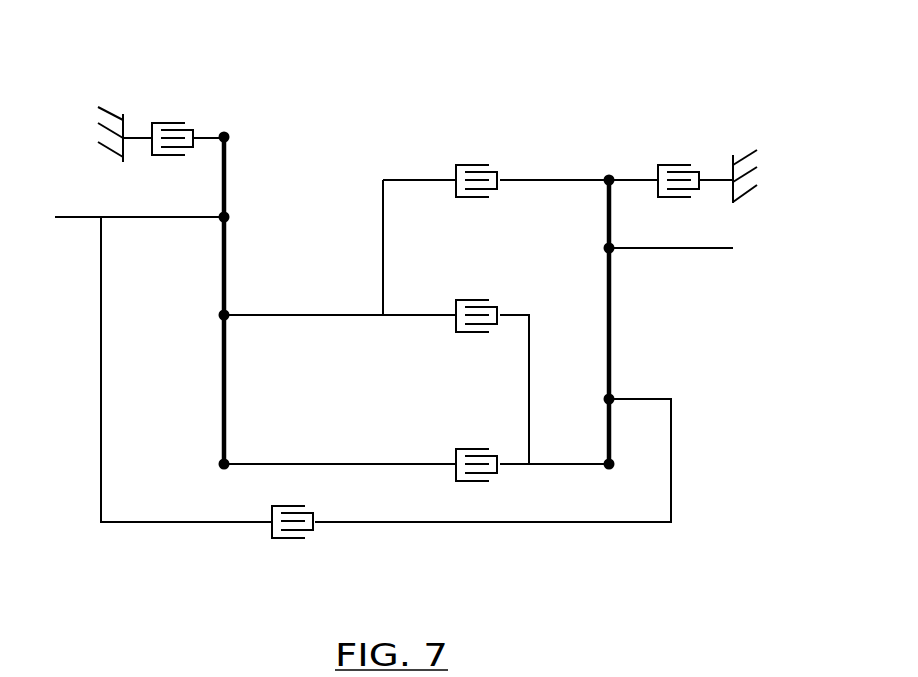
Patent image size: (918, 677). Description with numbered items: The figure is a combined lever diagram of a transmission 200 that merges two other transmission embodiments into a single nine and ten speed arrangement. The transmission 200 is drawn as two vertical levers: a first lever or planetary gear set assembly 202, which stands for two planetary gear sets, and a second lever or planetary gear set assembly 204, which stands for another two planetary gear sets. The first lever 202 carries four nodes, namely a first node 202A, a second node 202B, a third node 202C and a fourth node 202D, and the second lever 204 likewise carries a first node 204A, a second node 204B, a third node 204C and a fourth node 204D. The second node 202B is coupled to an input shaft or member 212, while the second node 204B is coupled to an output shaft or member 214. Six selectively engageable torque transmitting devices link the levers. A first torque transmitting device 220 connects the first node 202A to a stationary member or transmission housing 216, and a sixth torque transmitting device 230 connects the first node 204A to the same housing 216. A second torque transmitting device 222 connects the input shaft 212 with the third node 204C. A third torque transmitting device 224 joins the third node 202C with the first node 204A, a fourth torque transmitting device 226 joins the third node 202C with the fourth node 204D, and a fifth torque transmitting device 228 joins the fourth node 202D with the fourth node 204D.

The transmission 200 is at (553, 93).
The first lever or planetary gear set assembly 202 is at (266, 213).
The first node 202A is at (229, 136).
The second node 202B is at (229, 219).
The third node 202C is at (218, 315).
The fourth node 202D is at (218, 464).
The second lever or planetary gear set assembly 204 is at (661, 315).
The first node 204A is at (608, 170).
The second node 204B is at (603, 248).
The third node 204C is at (613, 397).
The fourth node 204D is at (609, 472).
The input shaft or member 212 is at (80, 216).
The output shaft or member 214 is at (712, 247).
The stationary member or transmission housing 216 is at (125, 128).
The first torque transmitting device 220 is at (175, 122).
The second torque transmitting device 222 is at (290, 538).
The third torque transmitting device 224 is at (473, 163).
The fourth torque transmitting device 226 is at (473, 298).
The fifth torque transmitting device 228 is at (472, 448).
The sixth torque transmitting device 230 is at (682, 163).